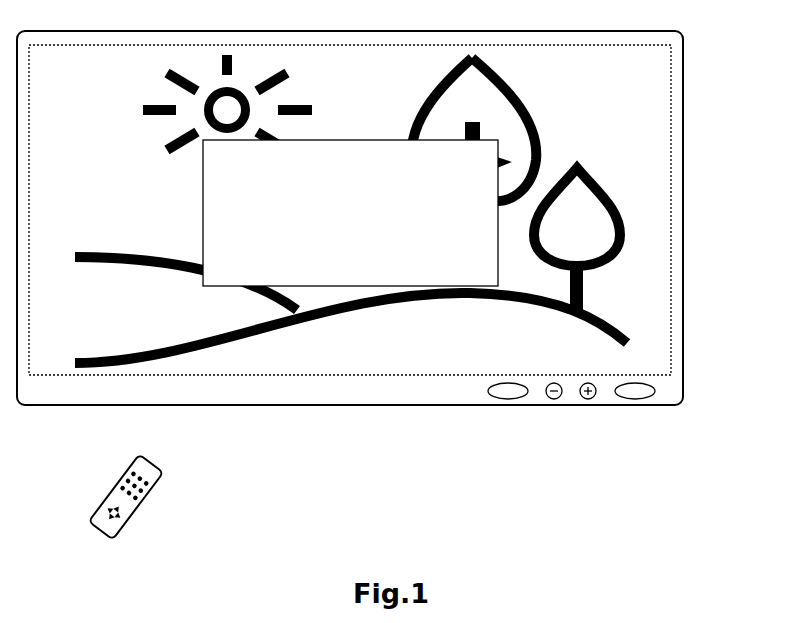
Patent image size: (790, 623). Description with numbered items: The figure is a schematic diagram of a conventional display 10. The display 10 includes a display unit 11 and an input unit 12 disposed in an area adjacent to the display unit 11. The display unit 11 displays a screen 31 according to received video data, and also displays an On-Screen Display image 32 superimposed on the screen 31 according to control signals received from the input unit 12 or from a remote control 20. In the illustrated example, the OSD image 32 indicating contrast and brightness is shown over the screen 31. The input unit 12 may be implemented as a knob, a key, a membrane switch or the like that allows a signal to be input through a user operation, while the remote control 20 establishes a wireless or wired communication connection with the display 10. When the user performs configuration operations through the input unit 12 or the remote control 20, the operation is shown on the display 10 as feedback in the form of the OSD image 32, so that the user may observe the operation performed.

The display 10 is at (683, 70).
The display unit 11 is at (671, 157).
The input unit 12 is at (640, 400).
The remote control 20 is at (150, 497).
The screen 31 is at (640, 228).
The On-Screen Display (OSD) image 32 is at (203, 196).